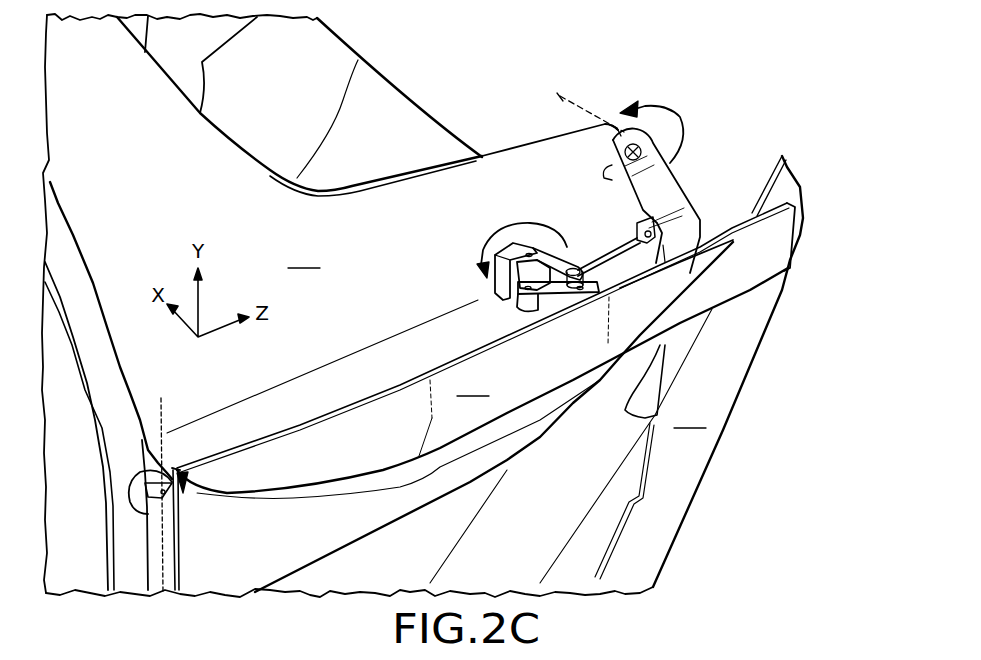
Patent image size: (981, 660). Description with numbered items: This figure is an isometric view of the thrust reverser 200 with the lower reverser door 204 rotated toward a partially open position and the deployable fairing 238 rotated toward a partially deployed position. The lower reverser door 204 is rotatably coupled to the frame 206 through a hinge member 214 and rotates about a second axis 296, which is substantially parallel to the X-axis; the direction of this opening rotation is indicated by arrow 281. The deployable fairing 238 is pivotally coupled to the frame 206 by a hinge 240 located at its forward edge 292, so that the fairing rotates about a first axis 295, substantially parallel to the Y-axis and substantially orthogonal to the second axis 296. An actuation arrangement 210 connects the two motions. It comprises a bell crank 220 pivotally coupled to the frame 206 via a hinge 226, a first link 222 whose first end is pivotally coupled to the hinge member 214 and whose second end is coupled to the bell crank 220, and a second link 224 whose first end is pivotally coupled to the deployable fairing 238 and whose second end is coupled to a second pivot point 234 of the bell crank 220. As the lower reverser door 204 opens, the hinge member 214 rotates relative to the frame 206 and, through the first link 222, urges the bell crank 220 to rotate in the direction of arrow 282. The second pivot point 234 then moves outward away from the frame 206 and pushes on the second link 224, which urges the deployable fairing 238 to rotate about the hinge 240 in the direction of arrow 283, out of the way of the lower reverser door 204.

The thrust reverser 200 is at (680, 71).
The lower reverser door 204 is at (699, 371).
The frame 206 is at (331, 303).
The actuation arrangement 210 is at (517, 180).
The hinge member 214 is at (672, 195).
The bell crank 220 is at (567, 250).
The first link 222 is at (606, 257).
The second link 224 is at (548, 303).
The hinge 226 is at (530, 250).
The second pivot point 234 is at (517, 293).
The deployable fairing 238 is at (486, 397).
The hinge 240 is at (163, 502).
The arrow 281 is at (677, 115).
The arrow 282 is at (482, 226).
The arrow 283 is at (159, 384).
The forward edge 292 is at (175, 550).
The first axis 295 is at (163, 397).
The second axis 296 is at (563, 97).